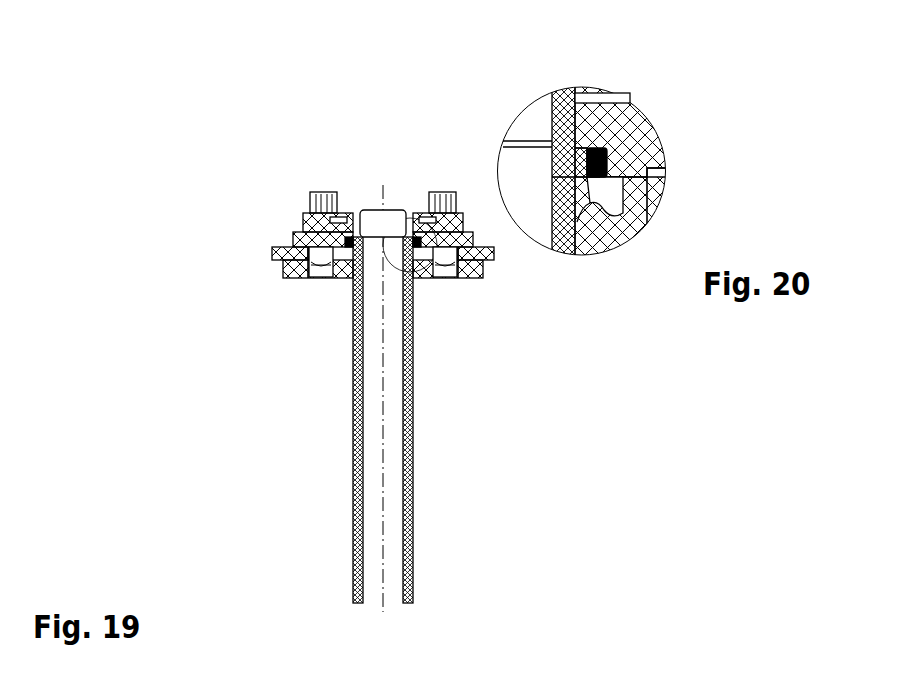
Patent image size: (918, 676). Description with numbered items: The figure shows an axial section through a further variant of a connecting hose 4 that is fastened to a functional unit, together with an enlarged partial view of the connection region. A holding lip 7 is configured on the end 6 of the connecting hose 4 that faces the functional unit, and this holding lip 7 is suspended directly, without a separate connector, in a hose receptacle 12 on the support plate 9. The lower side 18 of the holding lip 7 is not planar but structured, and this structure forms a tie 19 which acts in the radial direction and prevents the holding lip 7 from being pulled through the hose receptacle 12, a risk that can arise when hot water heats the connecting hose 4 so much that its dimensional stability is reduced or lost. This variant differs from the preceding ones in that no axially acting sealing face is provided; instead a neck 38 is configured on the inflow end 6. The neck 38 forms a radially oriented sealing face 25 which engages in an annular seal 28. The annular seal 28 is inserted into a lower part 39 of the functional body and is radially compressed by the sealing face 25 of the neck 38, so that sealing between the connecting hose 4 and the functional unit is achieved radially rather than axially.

In FIG. 19, the connecting hose 4 is at (410, 563).
In FIG. 20, the connecting hose 4 is at (568, 224).
In FIG. 19, the hose receptacle 12 is at (414, 281).
In FIG. 20, the hose receptacle 12 is at (565, 263).
In FIG. 19, the end 6 is at (320, 257).
In FIG. 19, the support plate 9 is at (280, 273).
In FIG. 20, the support plate 9 is at (633, 199).
In FIG. 19, the lower part 39 is at (310, 232).
In FIG. 20, the lower part 39 is at (552, 113).
In FIG. 19, the annular seal 28 is at (348, 239).
In FIG. 20, the annular seal 28 is at (608, 161).
In FIG. 19, the neck 38 is at (352, 238).
In FIG. 20, the neck 38 is at (552, 158).
In FIG. 20, the tie 19 is at (597, 186).
In FIG. 20, the holding lip 7 is at (612, 187).
In FIG. 20, the lower side 18 is at (618, 242).
In FIG. 20, the sealing face 25 is at (552, 177).